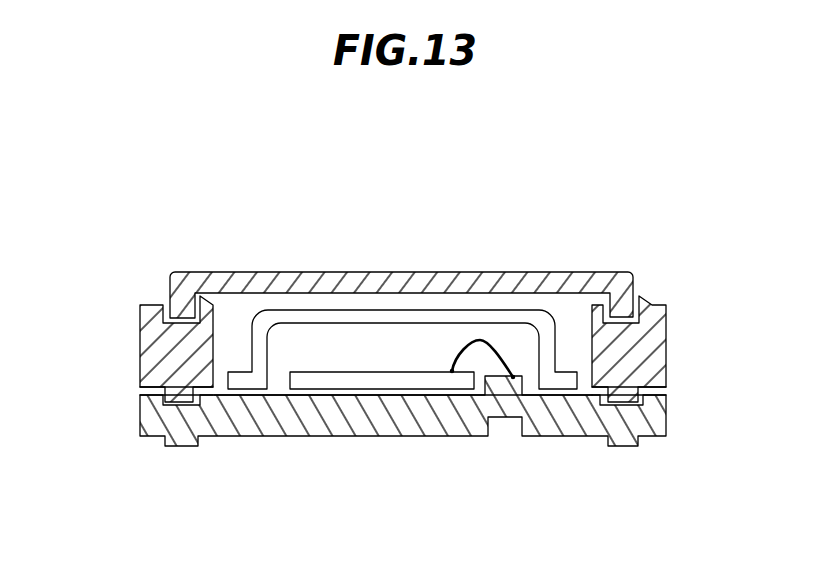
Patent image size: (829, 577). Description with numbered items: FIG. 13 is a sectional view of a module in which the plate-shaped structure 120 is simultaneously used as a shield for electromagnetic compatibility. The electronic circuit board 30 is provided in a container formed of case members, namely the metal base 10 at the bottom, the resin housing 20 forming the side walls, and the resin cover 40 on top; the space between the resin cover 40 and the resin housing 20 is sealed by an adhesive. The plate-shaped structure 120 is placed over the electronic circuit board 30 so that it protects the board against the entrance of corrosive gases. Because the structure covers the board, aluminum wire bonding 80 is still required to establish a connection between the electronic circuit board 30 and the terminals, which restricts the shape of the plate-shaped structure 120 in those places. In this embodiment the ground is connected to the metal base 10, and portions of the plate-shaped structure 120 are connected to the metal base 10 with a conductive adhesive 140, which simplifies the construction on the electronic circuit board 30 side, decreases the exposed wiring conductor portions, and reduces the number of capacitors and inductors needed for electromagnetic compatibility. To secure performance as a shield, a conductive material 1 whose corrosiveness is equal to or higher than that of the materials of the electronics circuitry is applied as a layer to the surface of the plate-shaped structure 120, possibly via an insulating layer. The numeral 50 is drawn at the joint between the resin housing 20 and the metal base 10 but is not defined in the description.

The conductive material 1 is at (368, 310).
The metal base 10 is at (313, 423).
The resin housing 20 is at (657, 322).
The electronic circuit board 30 is at (430, 378).
The resin cover 40 is at (498, 275).
The bonding layer between wall and base 50 is at (140, 390).
The aluminum wire bonding 80 is at (470, 340).
The plate-shaped structure 120 is at (292, 317).
The conductive adhesive 140 is at (562, 394).